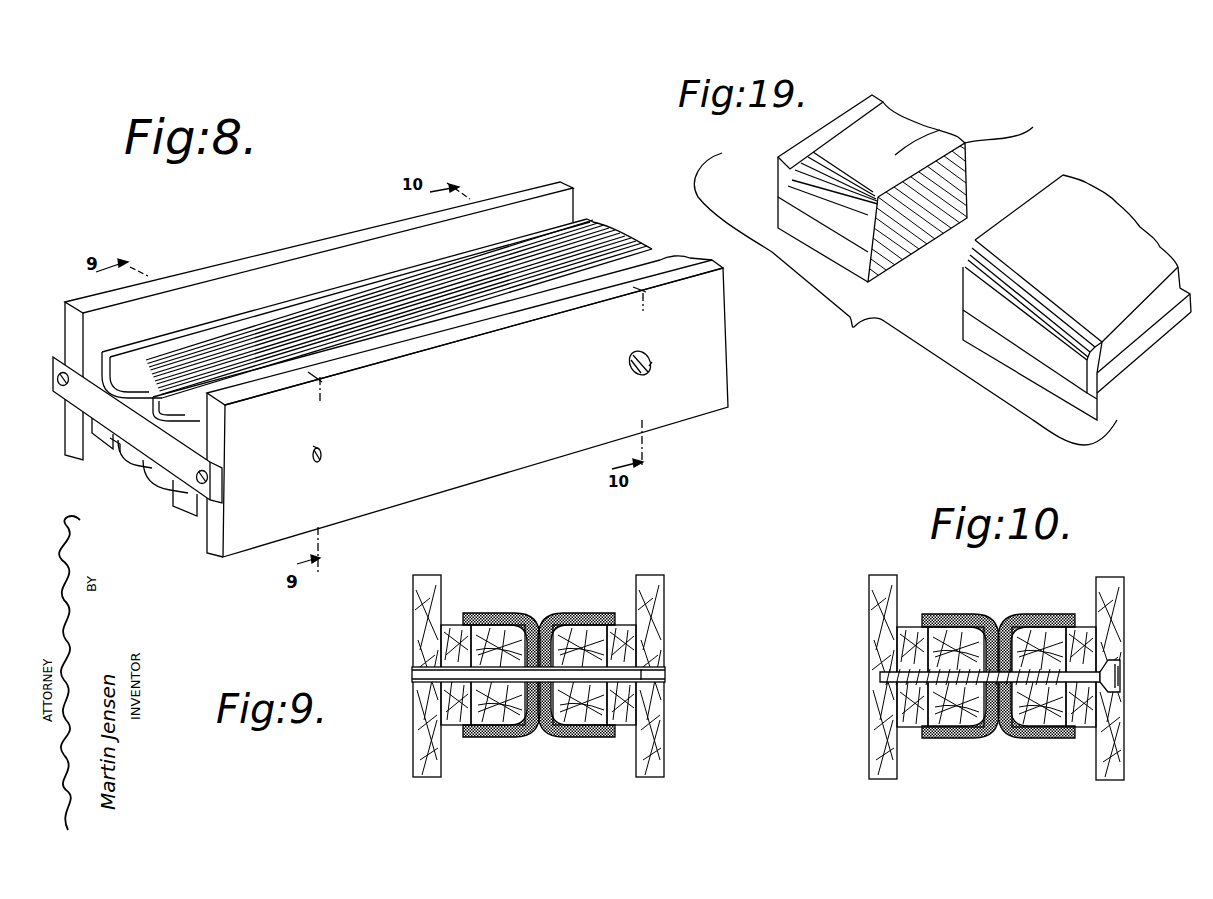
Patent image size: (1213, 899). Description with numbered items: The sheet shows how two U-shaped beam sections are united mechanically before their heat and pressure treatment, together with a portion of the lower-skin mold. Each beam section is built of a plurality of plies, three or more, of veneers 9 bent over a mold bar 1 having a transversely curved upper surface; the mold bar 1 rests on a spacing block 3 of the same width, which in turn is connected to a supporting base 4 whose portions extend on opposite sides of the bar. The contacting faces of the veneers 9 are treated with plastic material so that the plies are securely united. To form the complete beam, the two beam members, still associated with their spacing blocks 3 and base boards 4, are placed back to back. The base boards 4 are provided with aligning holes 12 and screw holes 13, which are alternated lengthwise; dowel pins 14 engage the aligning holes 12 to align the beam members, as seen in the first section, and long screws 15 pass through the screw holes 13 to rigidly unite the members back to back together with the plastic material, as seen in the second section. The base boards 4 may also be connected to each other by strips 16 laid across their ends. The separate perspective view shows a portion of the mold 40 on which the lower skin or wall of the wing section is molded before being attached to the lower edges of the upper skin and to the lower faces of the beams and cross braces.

In FIG. 8, the mold bar 1 is at (121, 441).
In FIG. 9, the mold bar 1 is at (494, 638).
In FIG. 10, the mold bar 1 is at (938, 630).
In FIG. 8, the spacing block 3 is at (98, 428).
In FIG. 9, the spacing block 3 is at (448, 640).
In FIG. 10, the spacing block 3 is at (905, 635).
In FIG. 8, the supporting base 4 is at (69, 444).
In FIG. 9, the supporting base 4 is at (421, 603).
In FIG. 10, the supporting base 4 is at (873, 598).
In FIG. 8, the veneers 9 is at (148, 458).
In FIG. 9, the veneers 9 is at (557, 613).
In FIG. 10, the veneers 9 is at (1012, 620).
In FIG. 8, the aligning holes 12 is at (323, 456).
In FIG. 9, the aligning holes 12 is at (415, 672).
In FIG. 8, the screw holes 13 is at (652, 361).
In FIG. 10, the screw holes 13 is at (1122, 676).
In FIG. 8, the dowel pins 14 is at (316, 451).
In FIG. 9, the dowel pins 14 is at (643, 677).
In FIG. 8, the long screws 15 is at (646, 356).
In FIG. 10, the long screws 15 is at (1097, 668).
In FIG. 8, the strips 16 is at (137, 430).
In FIG. 19, the mold 40 is at (1080, 250).